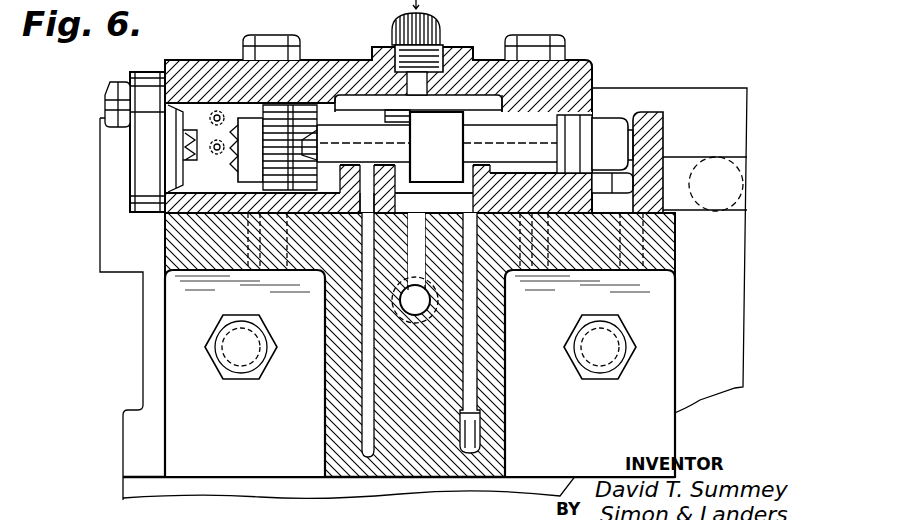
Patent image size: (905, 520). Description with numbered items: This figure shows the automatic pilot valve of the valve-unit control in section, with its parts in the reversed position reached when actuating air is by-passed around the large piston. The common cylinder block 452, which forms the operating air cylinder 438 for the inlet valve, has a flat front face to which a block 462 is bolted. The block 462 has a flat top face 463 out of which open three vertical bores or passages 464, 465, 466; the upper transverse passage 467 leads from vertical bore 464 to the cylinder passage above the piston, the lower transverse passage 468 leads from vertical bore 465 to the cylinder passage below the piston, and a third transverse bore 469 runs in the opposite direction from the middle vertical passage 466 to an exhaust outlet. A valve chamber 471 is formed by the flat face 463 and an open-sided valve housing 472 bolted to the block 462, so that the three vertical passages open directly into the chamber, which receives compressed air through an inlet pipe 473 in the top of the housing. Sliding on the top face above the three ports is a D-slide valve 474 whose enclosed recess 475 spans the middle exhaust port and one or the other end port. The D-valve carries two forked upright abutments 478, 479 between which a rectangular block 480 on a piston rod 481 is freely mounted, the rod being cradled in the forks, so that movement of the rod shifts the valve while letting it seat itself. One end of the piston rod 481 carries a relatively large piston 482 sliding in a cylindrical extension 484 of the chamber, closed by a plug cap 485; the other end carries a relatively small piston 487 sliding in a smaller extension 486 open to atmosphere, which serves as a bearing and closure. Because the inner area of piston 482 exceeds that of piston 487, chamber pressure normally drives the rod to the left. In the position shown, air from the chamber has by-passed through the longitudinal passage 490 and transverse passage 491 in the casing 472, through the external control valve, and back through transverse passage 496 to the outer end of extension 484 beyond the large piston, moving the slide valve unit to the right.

The operating air cylinder 438 is at (150, 396).
The common cylinder block 452 is at (725, 350).
The block 462 is at (328, 397).
The flat top face 463 is at (336, 226).
The vertical bore 464 is at (366, 416).
The vertical bore 465 is at (470, 398).
The vertical bore 466 is at (418, 270).
The upper transverse passage 467 is at (406, 258).
The lower transverse passage 468 is at (470, 432).
The third transverse bore 469 is at (410, 302).
The valve chamber 471 is at (462, 105).
The valve housing 472 is at (594, 72).
The inlet pipe 473 is at (440, 32).
The D-slide valve 474 is at (488, 185).
The enclosed recess 475 is at (428, 203).
The forked upright abutment 478 is at (390, 118).
The forked upright abutment 479 is at (515, 122).
The rectangular block 480 is at (436, 147).
The piston rod 481 is at (360, 132).
The piston 482 is at (275, 120).
The cylindrical extension 484 is at (254, 262).
The plug cap 485 is at (150, 75).
The cylindrical extension 486 is at (540, 268).
The piston 487 is at (595, 122).
The longitudinal passage 490 is at (250, 212).
The transverse passage 491 is at (168, 176).
The transverse passage 496 is at (171, 119).